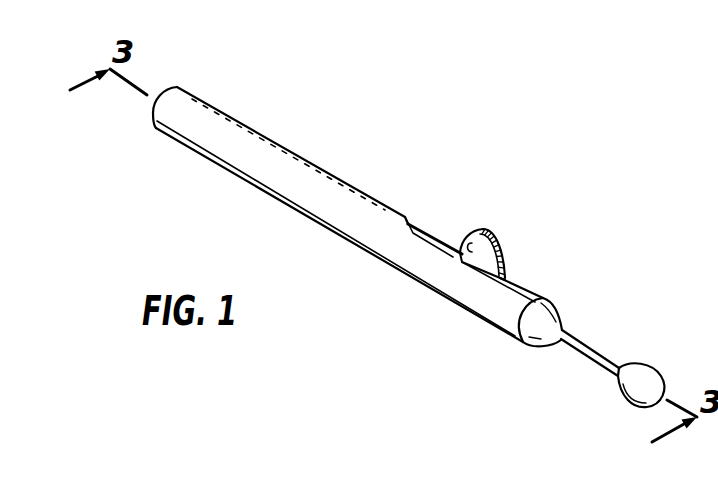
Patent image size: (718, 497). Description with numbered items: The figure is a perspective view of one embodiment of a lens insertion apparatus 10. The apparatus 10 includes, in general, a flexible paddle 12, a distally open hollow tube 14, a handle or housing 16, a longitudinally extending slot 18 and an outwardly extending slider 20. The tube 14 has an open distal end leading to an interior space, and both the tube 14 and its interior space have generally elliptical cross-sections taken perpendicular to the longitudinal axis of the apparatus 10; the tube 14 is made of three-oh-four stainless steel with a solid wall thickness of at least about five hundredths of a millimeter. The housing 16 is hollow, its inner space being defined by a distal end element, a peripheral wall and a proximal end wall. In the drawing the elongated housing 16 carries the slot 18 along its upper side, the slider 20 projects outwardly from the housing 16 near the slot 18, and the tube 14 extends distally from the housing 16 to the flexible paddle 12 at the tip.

The lens insertion apparatus 10 is at (367, 141).
The flexible paddle 12 is at (643, 385).
The distally open hollow tube 14 is at (590, 335).
The handle or housing 16 is at (356, 253).
The longitudinally extending slot 18 is at (456, 246).
The outwardly extending slider 20 is at (478, 235).